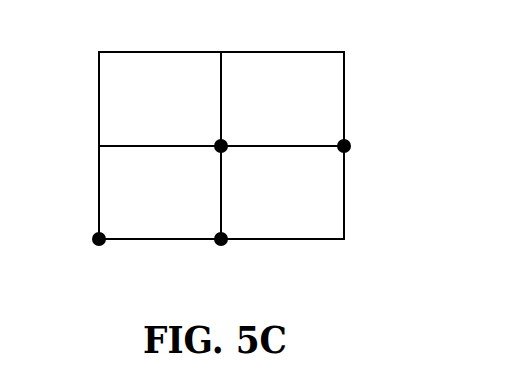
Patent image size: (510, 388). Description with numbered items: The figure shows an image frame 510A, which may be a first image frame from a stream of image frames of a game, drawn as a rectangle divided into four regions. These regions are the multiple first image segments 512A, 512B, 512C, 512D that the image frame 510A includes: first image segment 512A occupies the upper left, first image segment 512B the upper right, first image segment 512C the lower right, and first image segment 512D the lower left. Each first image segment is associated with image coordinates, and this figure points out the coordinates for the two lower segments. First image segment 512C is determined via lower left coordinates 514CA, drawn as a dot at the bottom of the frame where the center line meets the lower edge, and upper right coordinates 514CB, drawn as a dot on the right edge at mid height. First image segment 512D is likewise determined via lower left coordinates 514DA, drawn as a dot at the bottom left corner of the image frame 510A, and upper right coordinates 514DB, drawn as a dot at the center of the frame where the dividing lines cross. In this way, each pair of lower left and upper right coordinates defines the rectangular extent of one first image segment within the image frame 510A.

The image frame 510A is at (157, 51).
The first image segment 512A is at (130, 77).
The first image segment 512B is at (313, 77).
The first image segment 512C is at (313, 217).
The first image segment 512D is at (130, 217).
The upper right coordinates 514DB is at (228, 148).
The upper right coordinates 514CB is at (351, 146).
The lower left coordinates 514DA is at (94, 243).
The lower left coordinates 514CA is at (221, 246).